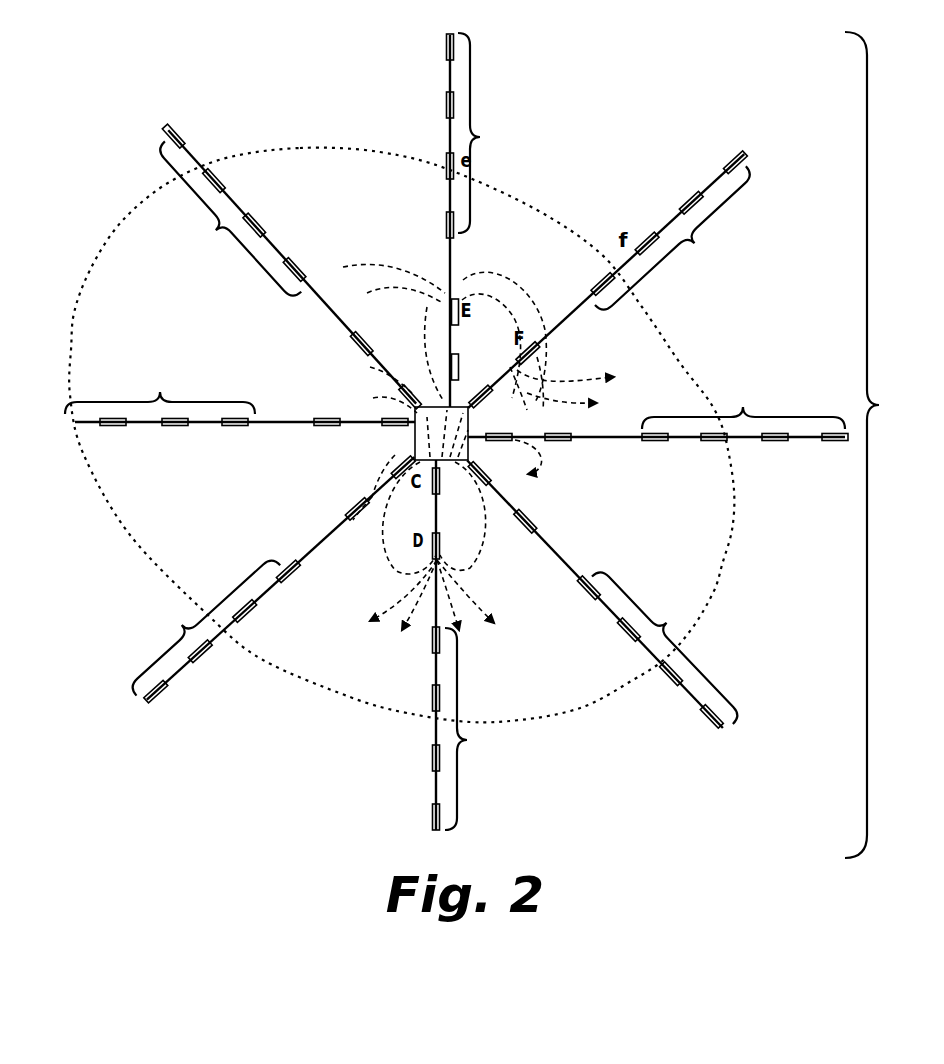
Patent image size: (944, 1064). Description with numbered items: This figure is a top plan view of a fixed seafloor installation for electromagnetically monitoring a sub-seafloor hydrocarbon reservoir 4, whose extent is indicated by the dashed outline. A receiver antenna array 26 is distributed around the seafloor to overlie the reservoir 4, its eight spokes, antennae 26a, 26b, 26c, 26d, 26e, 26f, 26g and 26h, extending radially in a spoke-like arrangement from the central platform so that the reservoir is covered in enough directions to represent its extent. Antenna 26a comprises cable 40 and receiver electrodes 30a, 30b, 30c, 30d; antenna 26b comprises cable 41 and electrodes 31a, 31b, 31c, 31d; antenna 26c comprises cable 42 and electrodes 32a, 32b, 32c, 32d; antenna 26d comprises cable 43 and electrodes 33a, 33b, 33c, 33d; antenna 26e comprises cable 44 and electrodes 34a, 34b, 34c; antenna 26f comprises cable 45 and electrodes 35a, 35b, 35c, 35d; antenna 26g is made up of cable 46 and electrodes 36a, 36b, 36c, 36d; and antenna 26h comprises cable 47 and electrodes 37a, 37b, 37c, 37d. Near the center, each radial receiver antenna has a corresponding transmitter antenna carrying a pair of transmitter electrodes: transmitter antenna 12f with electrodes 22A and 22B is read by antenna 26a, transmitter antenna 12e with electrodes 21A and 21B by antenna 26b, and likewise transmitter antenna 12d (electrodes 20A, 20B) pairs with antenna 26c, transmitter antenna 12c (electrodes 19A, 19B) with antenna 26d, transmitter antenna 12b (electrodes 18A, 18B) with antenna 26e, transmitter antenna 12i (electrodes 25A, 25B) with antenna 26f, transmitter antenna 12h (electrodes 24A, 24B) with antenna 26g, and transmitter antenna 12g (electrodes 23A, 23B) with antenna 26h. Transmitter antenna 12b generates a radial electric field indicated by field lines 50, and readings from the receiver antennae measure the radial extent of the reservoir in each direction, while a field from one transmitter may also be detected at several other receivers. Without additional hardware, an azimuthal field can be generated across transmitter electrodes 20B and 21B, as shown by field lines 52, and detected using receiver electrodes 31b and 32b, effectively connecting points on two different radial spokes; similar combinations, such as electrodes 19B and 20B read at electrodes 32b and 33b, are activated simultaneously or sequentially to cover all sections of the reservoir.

The sub-seafloor reservoir 4 is at (258, 146).
The transmitter antenna 12b is at (370, 415).
The transmitter antenna 12c is at (412, 360).
The transmitter antenna 12d is at (470, 340).
The transmitter antenna 12e is at (530, 381).
The transmitter antenna 12f is at (545, 455).
The transmitter antenna 12g is at (486, 510).
The transmitter antenna 12h is at (434, 503).
The transmitter antenna 12i is at (353, 517).
The transmitter electrode 18A is at (393, 426).
The transmitter electrode 18B is at (325, 426).
The transmitter electrode 19A is at (408, 393).
The transmitter electrode 19B is at (358, 336).
The transmitter electrode 20A is at (460, 368).
The transmitter electrode 20B is at (448, 280).
The transmitter electrode 21A is at (478, 396).
The transmitter electrode 21B is at (530, 348).
The transmitter electrode 22A is at (485, 443).
The transmitter electrode 22B is at (570, 440).
The transmitter electrode 23A is at (488, 478).
The transmitter electrode 23B is at (533, 527).
The transmitter electrode 24A is at (440, 487).
The transmitter electrode 24B is at (445, 548).
The transmitter electrode 25A is at (400, 460).
The transmitter electrode 25B is at (358, 508).
The receiver antenna array 26 is at (873, 445).
The receiver antenna 26a is at (743, 409).
The receiver antenna 26b is at (678, 243).
The receiver antenna 26c is at (483, 133).
The receiver antenna 26d is at (225, 223).
The receiver antenna 26e is at (160, 394).
The receiver antenna 26f is at (201, 622).
The receiver antenna 26g is at (471, 729).
The receiver antenna 26h is at (670, 642).
The receiver electrode 30a is at (655, 443).
The receiver electrode 30b is at (714, 443).
The receiver electrode 30c is at (775, 443).
The receiver electrode 30d is at (835, 443).
The receiver electrode 31a is at (603, 280).
The receiver electrode 31b is at (648, 242).
The receiver electrode 31c is at (692, 200).
The receiver electrode 31d is at (737, 160).
The receiver electrode 32a is at (447, 225).
The receiver electrode 32b is at (447, 166).
The receiver electrode 32c is at (447, 105).
The receiver electrode 32d is at (447, 47).
The receiver electrode 33a is at (297, 268).
The receiver electrode 33b is at (262, 222).
The receiver electrode 33c is at (218, 178).
The receiver electrode 33d is at (178, 133).
The receiver electrode 34a is at (235, 426).
The receiver electrode 34b is at (175, 426).
The receiver electrode 34c is at (113, 426).
The receiver electrode 35a is at (292, 575).
The receiver electrode 35b is at (248, 617).
The receiver electrode 35c is at (203, 658).
The receiver electrode 35d is at (160, 700).
The receiver electrode 36a is at (433, 640).
The receiver electrode 36b is at (433, 698).
The receiver electrode 36c is at (433, 758).
The receiver electrode 36d is at (433, 817).
The receiver electrode 37a is at (590, 590).
The receiver electrode 37b is at (630, 632).
The receiver electrode 37c is at (672, 675).
The receiver electrode 37d is at (713, 718).
The cable 40 is at (615, 437).
The cable 41 is at (582, 306).
The cable 42 is at (452, 262).
The cable 43 is at (322, 300).
The cable 44 is at (283, 420).
The cable 45 is at (292, 562).
The cable 46 is at (437, 612).
The cable 47 is at (562, 556).
The field lines 50 is at (400, 572).
The field lines 52 is at (520, 287).